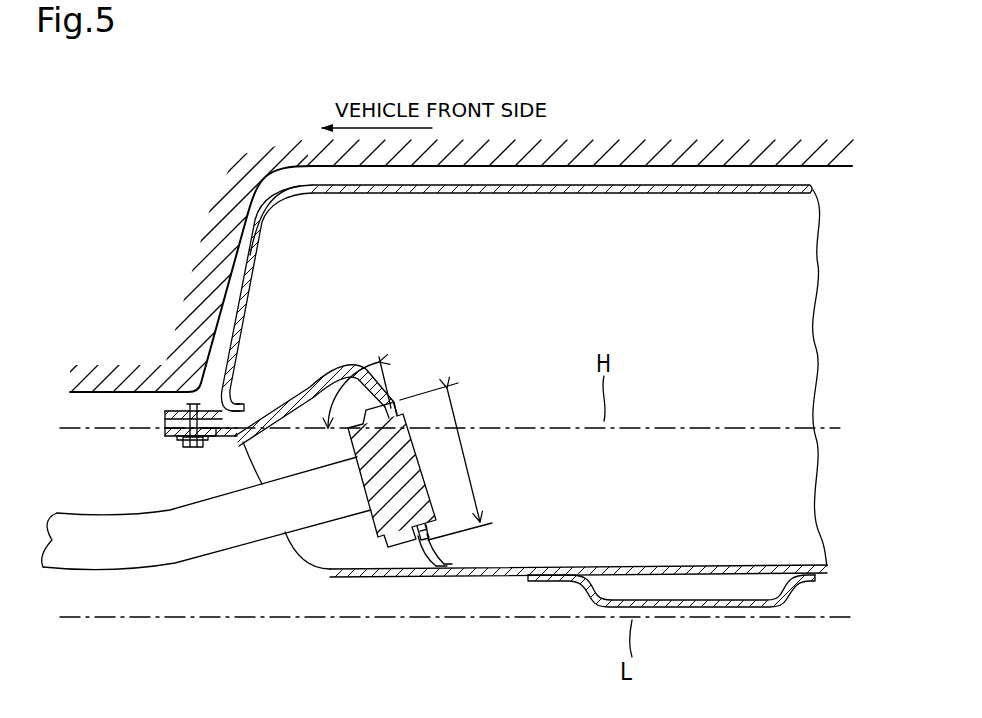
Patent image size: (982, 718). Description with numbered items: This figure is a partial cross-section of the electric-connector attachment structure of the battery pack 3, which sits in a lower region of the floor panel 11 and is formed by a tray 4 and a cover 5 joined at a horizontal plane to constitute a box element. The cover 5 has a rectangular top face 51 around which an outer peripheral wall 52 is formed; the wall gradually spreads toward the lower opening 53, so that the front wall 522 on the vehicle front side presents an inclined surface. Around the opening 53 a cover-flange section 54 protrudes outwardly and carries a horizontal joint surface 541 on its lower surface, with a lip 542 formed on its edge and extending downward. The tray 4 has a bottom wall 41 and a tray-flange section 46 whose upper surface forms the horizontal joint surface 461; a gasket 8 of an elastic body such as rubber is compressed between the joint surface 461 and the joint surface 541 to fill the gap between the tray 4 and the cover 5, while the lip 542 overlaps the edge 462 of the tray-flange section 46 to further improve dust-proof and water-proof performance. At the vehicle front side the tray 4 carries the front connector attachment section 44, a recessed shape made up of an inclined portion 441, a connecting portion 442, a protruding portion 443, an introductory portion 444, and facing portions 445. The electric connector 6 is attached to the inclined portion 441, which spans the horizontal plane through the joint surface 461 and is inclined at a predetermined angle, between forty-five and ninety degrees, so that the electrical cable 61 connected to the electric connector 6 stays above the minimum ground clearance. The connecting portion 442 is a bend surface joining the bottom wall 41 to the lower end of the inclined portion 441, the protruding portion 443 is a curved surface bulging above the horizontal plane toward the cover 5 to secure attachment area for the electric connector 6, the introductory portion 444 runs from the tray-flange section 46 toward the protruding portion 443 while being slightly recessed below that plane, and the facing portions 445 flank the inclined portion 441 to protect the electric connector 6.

The battery pack 3 is at (176, 296).
The tray 4 is at (578, 573).
The cover 5 is at (436, 265).
The electric connector 6 is at (373, 527).
The gasket 8 is at (188, 444).
The floor panel 11 is at (705, 169).
The bottom wall 41 is at (562, 563).
The front connector attachment section 44 is at (400, 478).
The tray-flange section 46 is at (201, 448).
The top face 51 is at (630, 185).
The outer peripheral wall 52 is at (208, 298).
The opening 53 is at (238, 404).
The cover-flange section 54 is at (148, 374).
The electrical cable 61 is at (118, 551).
The inclined portion 441 is at (428, 541).
The connecting portion 442 is at (432, 578).
The protruding portion 443 is at (352, 364).
The introductory portion 444 is at (247, 430).
The facing portions 445 is at (330, 555).
The joint surface 461 is at (240, 444).
The edge 462 is at (177, 440).
The front wall 522 is at (248, 262).
The joint surface 541 is at (170, 413).
The lip 542 is at (163, 424).